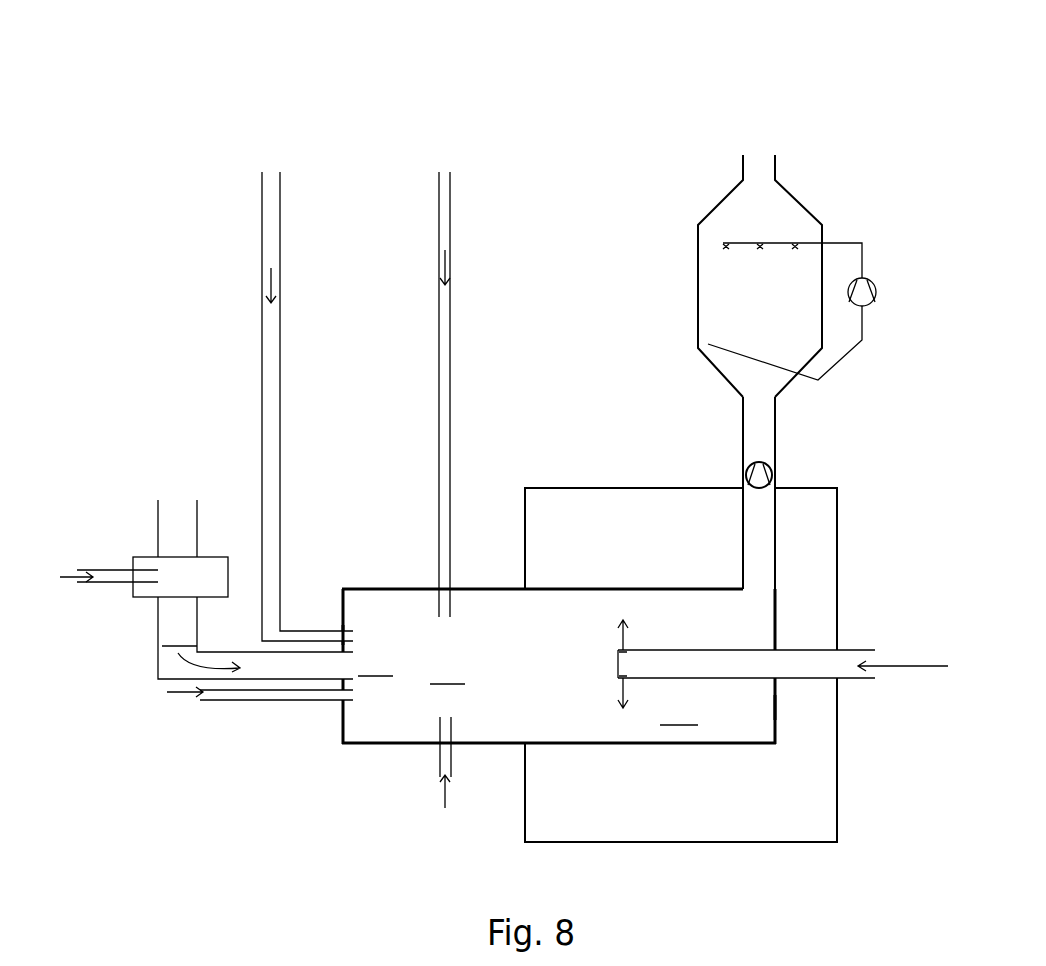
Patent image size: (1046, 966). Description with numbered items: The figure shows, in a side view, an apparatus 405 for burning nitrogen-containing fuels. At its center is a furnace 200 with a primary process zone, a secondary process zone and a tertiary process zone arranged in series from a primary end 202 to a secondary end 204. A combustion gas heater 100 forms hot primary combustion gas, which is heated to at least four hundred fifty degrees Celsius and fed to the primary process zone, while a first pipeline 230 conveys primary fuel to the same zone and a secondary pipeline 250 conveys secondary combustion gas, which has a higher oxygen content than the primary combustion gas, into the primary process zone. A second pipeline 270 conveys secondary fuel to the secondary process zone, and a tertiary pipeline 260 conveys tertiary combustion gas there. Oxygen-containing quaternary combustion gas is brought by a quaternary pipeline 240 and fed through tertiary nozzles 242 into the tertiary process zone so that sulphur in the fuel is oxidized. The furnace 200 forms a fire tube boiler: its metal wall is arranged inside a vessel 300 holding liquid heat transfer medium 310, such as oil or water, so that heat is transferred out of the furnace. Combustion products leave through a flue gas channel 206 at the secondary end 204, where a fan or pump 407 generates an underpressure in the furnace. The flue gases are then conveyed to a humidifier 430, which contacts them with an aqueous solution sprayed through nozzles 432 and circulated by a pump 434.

The apparatus 405 is at (438, 88).
The combustion gas heater 100 is at (133, 557).
The furnace 200 is at (577, 671).
The primary end 202 is at (358, 611).
The secondary end 204 is at (768, 715).
The flue gas channel 206 is at (778, 535).
The first pipeline 230 is at (282, 413).
The second pipeline 270 is at (452, 410).
The secondary pipeline 250 is at (273, 700).
The tertiary pipeline 260 is at (453, 752).
The quaternary pipeline 240 is at (858, 650).
The tertiary nozzles 242 is at (620, 648).
The vessel 300 is at (633, 489).
The liquid heat transfer medium 310 is at (715, 549).
The pump 407 is at (766, 478).
The humidifier 430 is at (708, 212).
The nozzles 432 is at (797, 243).
The pump 434 is at (874, 283).